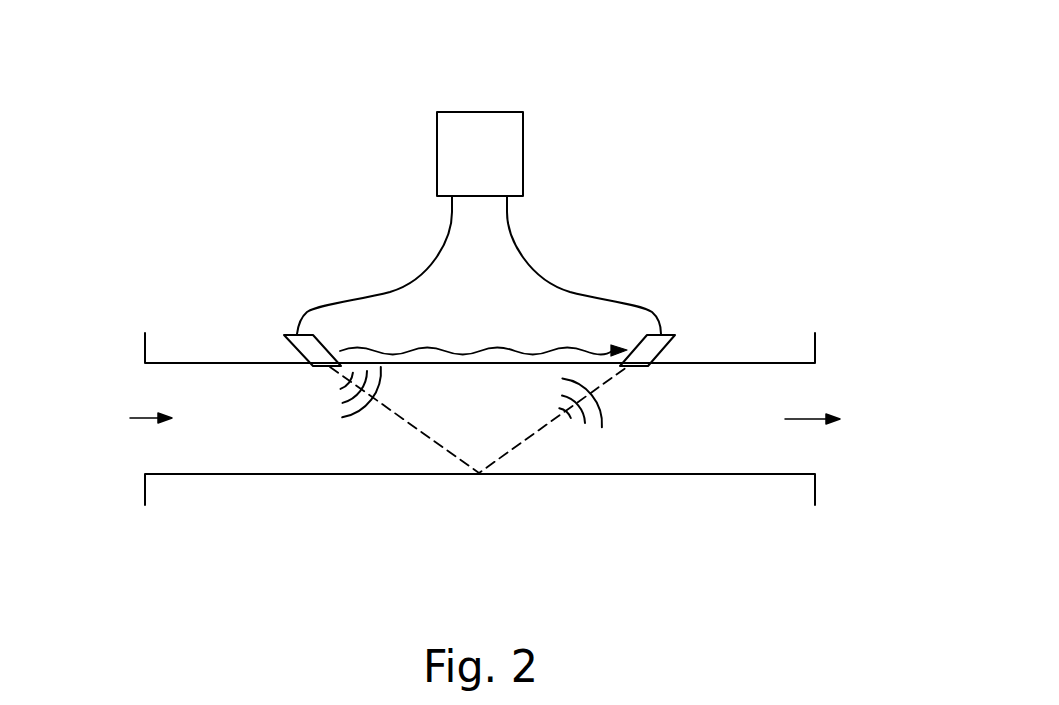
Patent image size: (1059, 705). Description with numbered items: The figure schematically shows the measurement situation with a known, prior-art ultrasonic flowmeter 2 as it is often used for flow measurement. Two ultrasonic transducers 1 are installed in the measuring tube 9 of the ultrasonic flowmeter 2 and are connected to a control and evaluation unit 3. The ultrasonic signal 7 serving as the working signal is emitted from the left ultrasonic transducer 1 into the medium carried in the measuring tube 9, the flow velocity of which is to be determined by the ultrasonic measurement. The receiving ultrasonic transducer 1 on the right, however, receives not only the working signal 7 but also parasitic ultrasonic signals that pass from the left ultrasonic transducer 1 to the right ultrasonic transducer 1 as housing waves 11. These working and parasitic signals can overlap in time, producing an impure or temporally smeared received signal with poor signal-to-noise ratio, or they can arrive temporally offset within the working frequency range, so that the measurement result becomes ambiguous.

The ultrasonic transducer 1 is at (297, 333).
The ultrasonic flowmeter 2 is at (706, 84).
The control and evaluation unit 3 is at (480, 154).
The ultrasonic signal 7 is at (365, 410).
The measuring tube 9 is at (708, 476).
The housing waves 11 is at (417, 348).